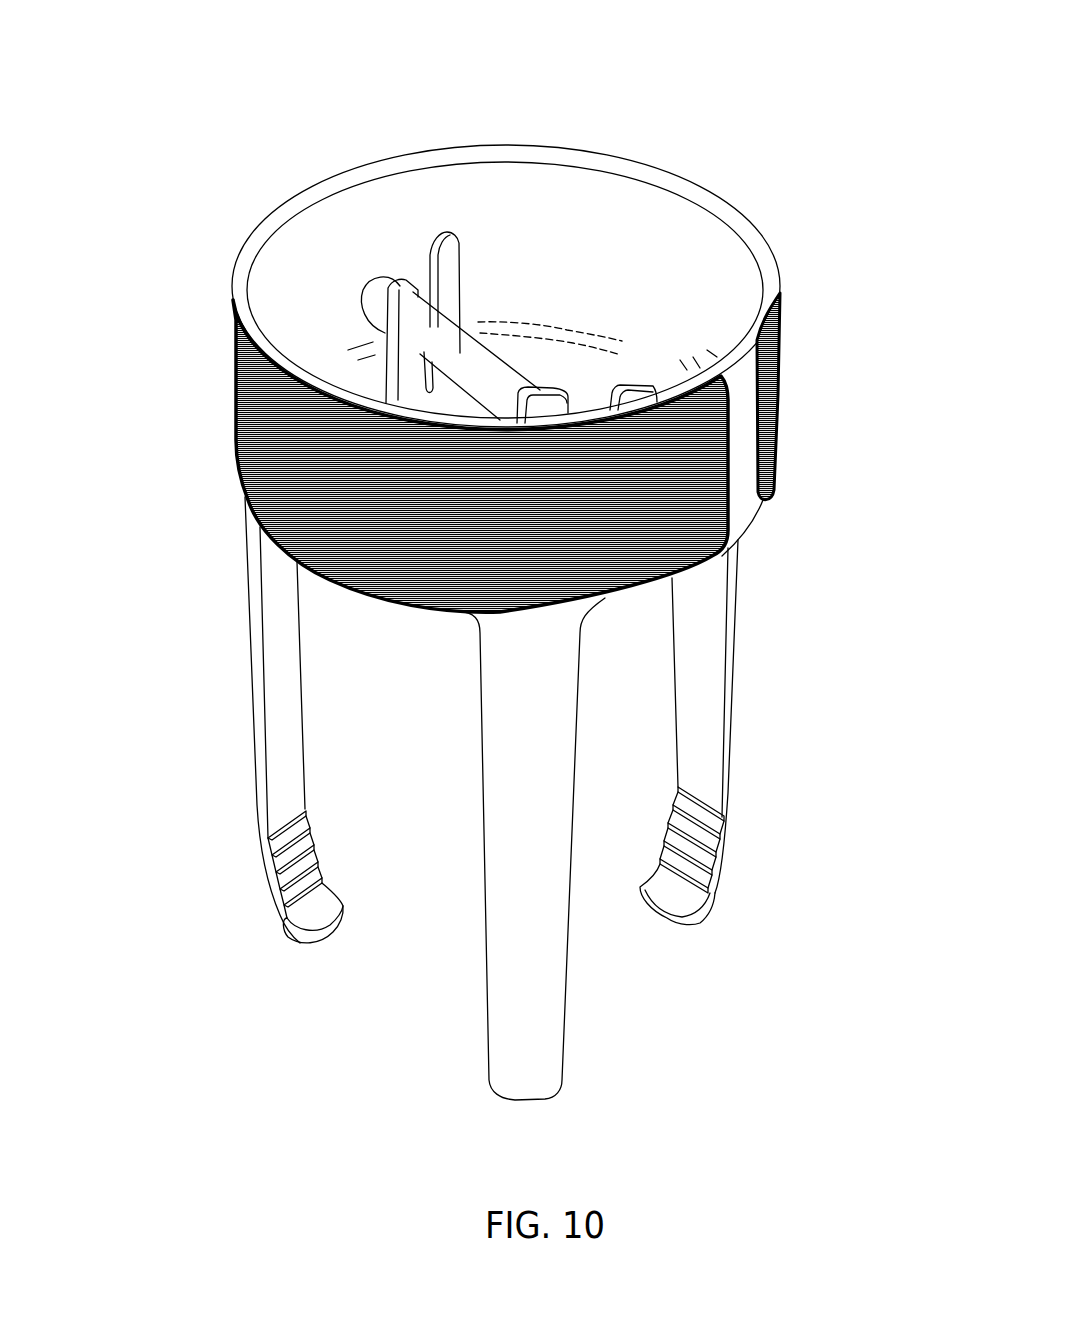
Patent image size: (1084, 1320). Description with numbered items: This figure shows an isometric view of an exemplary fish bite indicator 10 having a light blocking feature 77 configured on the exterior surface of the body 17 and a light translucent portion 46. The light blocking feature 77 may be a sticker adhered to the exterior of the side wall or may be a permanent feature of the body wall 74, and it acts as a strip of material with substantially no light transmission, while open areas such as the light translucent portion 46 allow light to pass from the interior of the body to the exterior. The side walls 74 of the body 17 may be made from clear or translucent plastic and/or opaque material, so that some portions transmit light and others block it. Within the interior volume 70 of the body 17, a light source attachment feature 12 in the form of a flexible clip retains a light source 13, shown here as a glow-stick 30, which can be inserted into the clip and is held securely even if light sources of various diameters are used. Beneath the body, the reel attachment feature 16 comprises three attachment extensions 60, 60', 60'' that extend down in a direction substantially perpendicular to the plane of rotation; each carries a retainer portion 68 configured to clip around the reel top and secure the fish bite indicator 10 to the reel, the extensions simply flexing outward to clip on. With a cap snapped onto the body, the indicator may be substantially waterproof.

The fish bite indicator 10 is at (483, 551).
The interior volume 70 is at (509, 307).
The side wall 74 is at (650, 190).
The body 17 is at (708, 253).
The light source attachment feature 12 is at (445, 242).
The glow-stick 30 is at (467, 348).
The light source 13 is at (503, 357).
The light blocking feature 77 is at (247, 428).
The light translucent portion 46 is at (742, 507).
The reel attachment feature 16 is at (273, 628).
The attachment extension 60 is at (241, 720).
The attachment extension 60' is at (749, 744).
The retainer portion 68 is at (677, 917).
The attachment extension 60'' is at (570, 849).